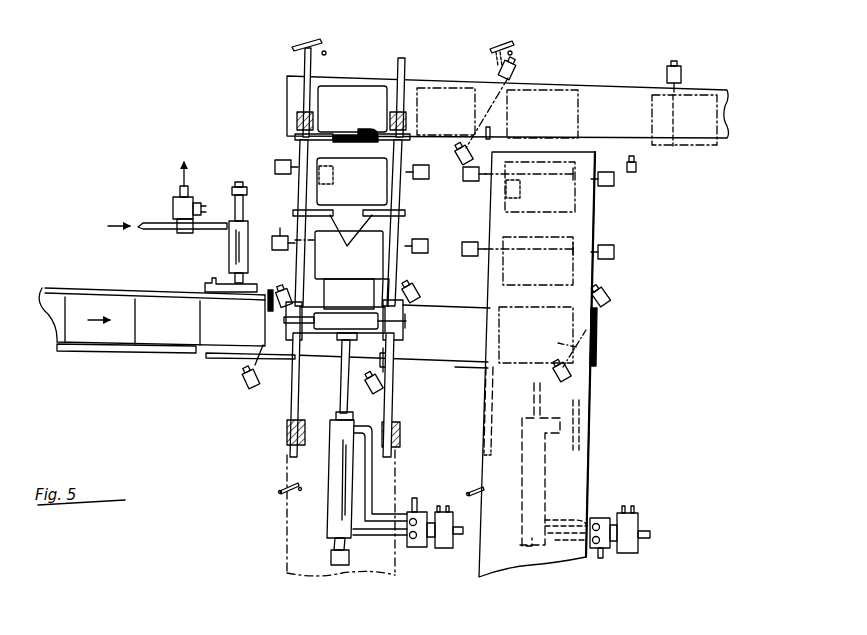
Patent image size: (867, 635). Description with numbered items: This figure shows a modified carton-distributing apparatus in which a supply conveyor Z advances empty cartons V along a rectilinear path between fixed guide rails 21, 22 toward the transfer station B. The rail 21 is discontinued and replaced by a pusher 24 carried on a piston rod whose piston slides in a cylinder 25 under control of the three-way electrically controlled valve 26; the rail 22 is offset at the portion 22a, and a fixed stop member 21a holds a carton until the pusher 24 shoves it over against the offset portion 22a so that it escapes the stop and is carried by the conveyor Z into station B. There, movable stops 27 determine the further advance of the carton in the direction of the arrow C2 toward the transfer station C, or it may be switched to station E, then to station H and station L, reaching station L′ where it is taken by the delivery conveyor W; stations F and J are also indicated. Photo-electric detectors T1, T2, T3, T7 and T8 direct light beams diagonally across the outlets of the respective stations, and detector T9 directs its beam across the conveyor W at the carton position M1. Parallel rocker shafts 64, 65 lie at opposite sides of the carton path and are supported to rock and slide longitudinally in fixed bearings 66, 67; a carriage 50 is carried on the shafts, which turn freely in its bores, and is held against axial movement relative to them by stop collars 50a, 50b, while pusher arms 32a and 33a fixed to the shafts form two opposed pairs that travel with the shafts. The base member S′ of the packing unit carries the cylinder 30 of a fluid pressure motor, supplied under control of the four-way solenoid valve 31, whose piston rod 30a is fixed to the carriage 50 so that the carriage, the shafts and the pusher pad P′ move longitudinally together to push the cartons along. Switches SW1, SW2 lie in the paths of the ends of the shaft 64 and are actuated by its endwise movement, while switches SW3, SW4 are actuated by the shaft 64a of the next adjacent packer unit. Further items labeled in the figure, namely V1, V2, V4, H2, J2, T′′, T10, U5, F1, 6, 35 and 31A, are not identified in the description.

The delivery conveyor W is at (365, 82).
The valve V2 is at (330, 90).
The station L′ is at (450, 92).
The motor unit 35 is at (542, 114).
The motor M is at (557, 92).
The carton position M1 is at (655, 103).
The station L is at (380, 100).
The switch SW1 is at (292, 45).
The fixed bearing 67 is at (297, 120).
The pusher arms 33a is at (378, 138).
The switch SW3 is at (514, 45).
The photo-electric detector T8 is at (514, 70).
The photo-electric detector T9 is at (681, 69).
The station H is at (386, 190).
The valve V1 is at (363, 191).
The frame member H2 is at (318, 190).
The solenoid T′′ is at (275, 164).
The solenoid T10 is at (286, 231).
The pusher arms 32a is at (349, 247).
The pusher pad P′ is at (355, 303).
The station E is at (383, 265).
The valve V4 is at (415, 213).
The solenoid J2 is at (467, 235).
The movable stops 27 is at (383, 300).
The fixed stop member 21a is at (268, 290).
The carriage 50 is at (398, 330).
The stop collar 50b is at (395, 314).
The arrow C2 is at (478, 329).
The transfer station B is at (334, 354).
The direction arrow 6 is at (278, 336).
The stop collar 50a is at (294, 338).
The rocker shaft 64 is at (287, 416).
The fixed bearing 66 is at (401, 433).
The rocker shaft 65 is at (396, 405).
The piston rod 30a is at (342, 394).
The photo-electric detector T2 is at (369, 392).
The cylinder 30 is at (337, 487).
The four-way solenoid valve 31 is at (444, 551).
The base member S′ is at (302, 548).
The switch SW2 is at (277, 486).
The switch SW4 is at (468, 492).
The shaft 64a is at (488, 386).
The photo-electric detector T1 is at (247, 390).
The carton V is at (145, 302).
The guide rail 21 is at (97, 278).
The supply conveyor Z is at (55, 336).
The guide rail 22 is at (133, 351).
The flow direction F1 is at (200, 357).
The offset rail portion 22a is at (227, 357).
The three-way electrically controlled valve 26 is at (173, 201).
The cylinder 25 is at (229, 257).
The pusher 24 is at (205, 289).
The station J is at (568, 202).
The photo-electric detector T7 is at (618, 171).
The unit U5 is at (650, 220).
The station F is at (563, 276).
The photo-electric detector T3 is at (613, 298).
The transfer station C is at (588, 351).
The valve 31A is at (627, 523).